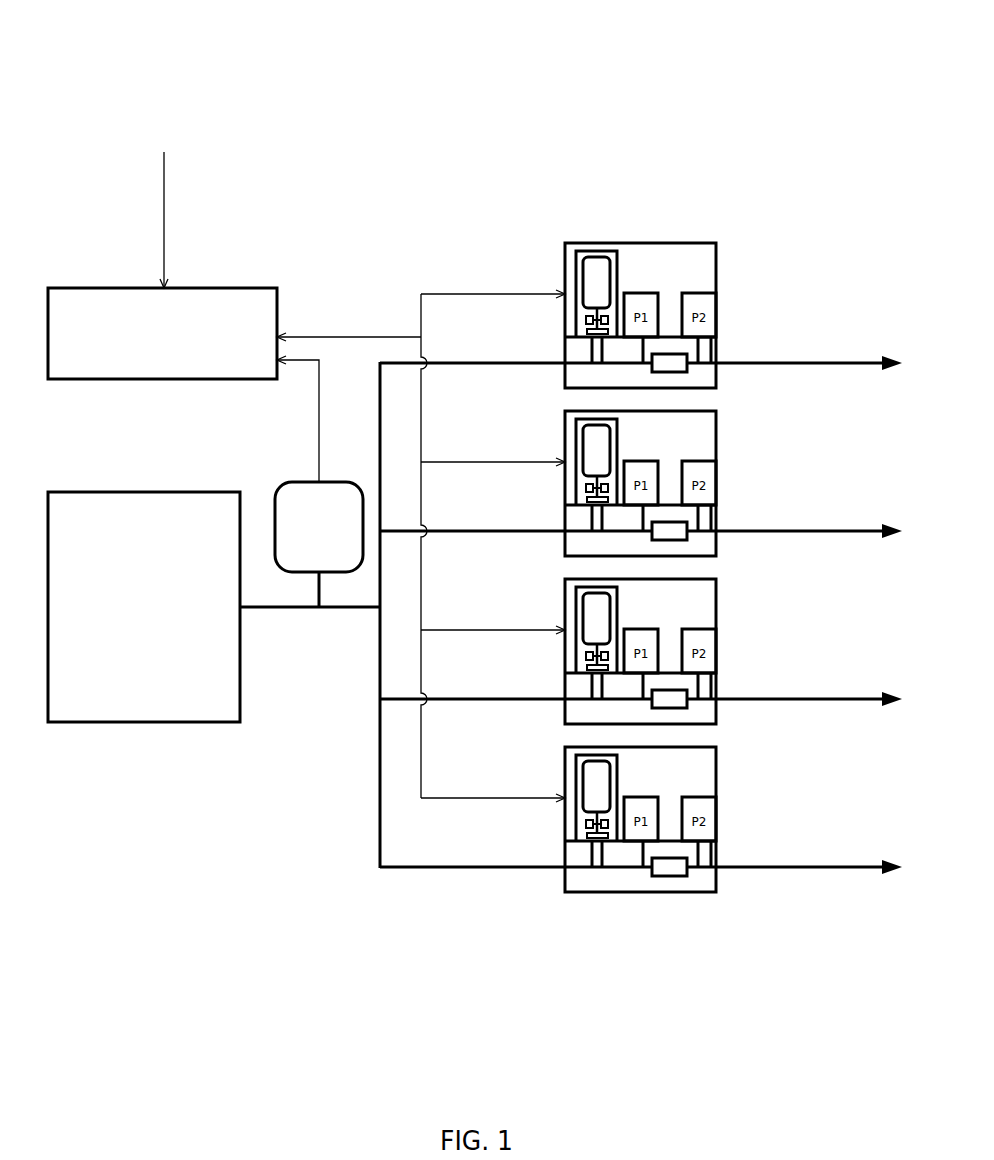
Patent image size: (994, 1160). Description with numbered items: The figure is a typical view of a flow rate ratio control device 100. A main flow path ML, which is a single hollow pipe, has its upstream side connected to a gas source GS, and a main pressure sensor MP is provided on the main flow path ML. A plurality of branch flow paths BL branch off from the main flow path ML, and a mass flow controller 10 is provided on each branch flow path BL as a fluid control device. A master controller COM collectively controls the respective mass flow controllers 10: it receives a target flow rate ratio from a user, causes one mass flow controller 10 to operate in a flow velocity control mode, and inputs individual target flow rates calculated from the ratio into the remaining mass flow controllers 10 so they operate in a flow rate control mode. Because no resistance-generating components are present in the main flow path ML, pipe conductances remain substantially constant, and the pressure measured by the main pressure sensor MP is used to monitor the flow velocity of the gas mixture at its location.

The flow rate ratio control device 100 is at (763, 80).
The mass flow controller 10 is at (558, 269).
The master controller COM is at (122, 287).
The main pressure sensor MP is at (283, 483).
The gas source GS is at (138, 723).
The main flow path ML is at (287, 608).
The branch flow path BL is at (808, 365).